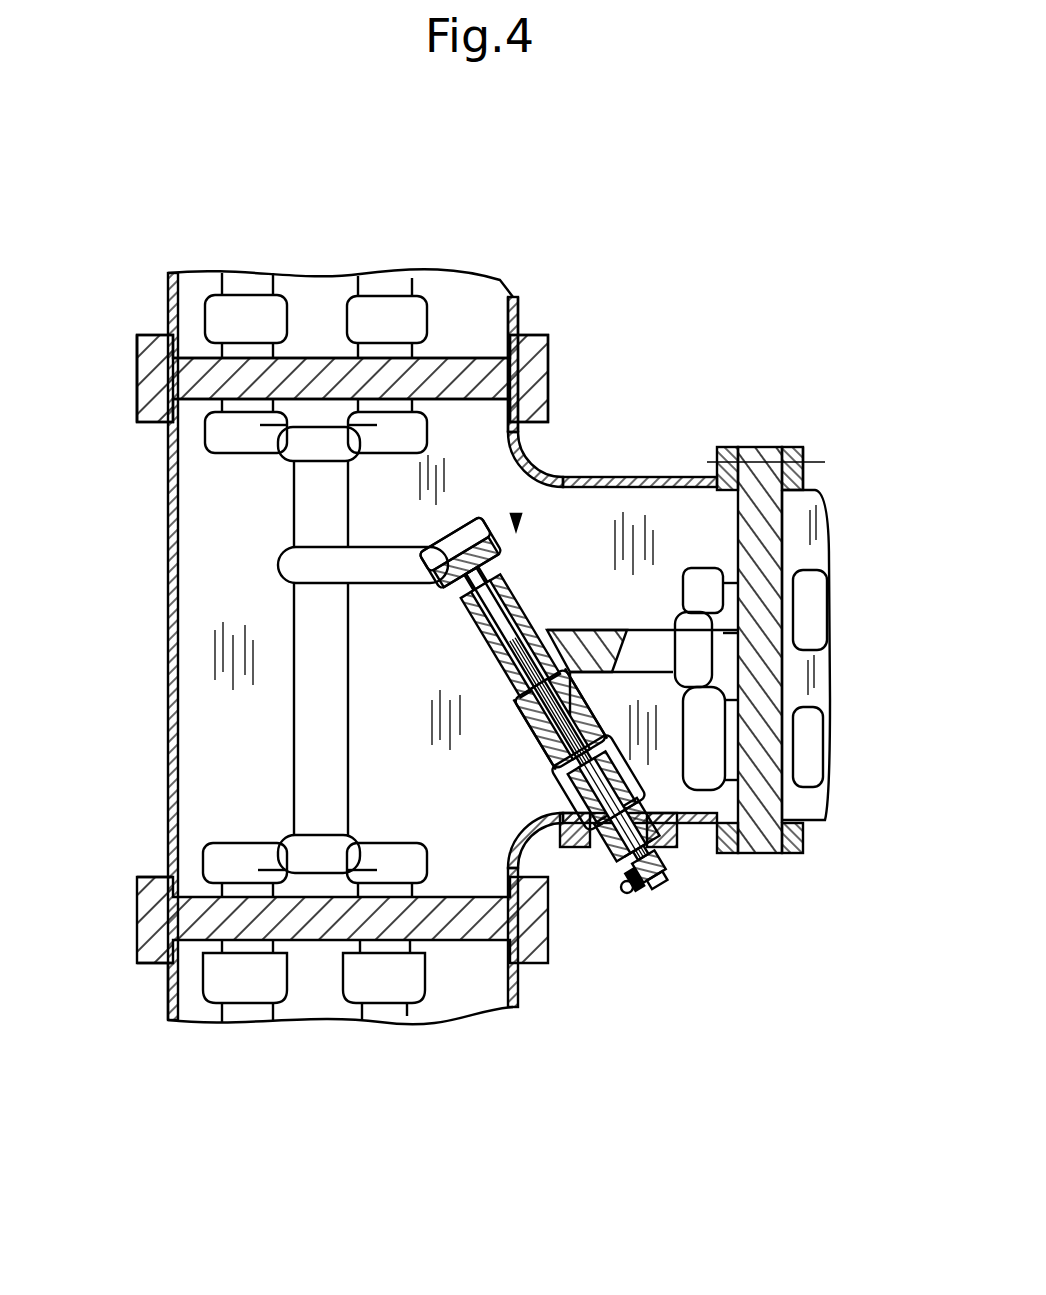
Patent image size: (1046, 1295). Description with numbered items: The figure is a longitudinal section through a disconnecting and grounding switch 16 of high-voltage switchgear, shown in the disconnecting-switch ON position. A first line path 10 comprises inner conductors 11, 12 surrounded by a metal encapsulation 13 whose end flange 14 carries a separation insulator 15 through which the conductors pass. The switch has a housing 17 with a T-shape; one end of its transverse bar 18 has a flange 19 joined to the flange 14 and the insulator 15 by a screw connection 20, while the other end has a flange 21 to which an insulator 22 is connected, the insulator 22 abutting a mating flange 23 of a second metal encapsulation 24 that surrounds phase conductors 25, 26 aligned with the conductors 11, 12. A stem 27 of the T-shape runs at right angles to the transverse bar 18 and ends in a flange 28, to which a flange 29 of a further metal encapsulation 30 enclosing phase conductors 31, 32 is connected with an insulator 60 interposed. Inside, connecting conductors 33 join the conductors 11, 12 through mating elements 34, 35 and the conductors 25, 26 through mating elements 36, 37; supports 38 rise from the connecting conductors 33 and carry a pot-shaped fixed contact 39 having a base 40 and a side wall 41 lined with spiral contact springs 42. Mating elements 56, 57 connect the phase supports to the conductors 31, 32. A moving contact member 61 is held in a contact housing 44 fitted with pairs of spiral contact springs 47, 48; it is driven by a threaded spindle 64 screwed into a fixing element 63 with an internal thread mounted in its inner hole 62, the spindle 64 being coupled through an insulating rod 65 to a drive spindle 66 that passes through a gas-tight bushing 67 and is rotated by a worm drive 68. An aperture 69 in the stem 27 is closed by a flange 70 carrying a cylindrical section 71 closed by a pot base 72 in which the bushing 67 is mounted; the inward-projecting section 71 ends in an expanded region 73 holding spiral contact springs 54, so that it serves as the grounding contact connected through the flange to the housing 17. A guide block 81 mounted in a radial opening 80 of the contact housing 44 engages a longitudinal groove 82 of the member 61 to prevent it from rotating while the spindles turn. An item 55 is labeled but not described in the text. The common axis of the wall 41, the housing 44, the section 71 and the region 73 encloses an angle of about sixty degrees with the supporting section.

The first line path 10 is at (360, 316).
The inner conductor 11 is at (213, 325).
The inner conductor 12 is at (366, 420).
The metal encapsulation 13 is at (152, 330).
The end flange 14 is at (145, 375).
The separation insulator 15 is at (152, 433).
The disconnecting and grounding switch 16 is at (527, 395).
The housing 17 is at (556, 480).
The transverse bar 18 is at (466, 450).
The flange 19 is at (140, 411).
The screw connection 20 is at (140, 333).
The flange 21 is at (148, 878).
The insulator 22 is at (142, 915).
The mating flange 23 is at (150, 950).
The metal encapsulation 24 is at (170, 1030).
The phase conductor 25 is at (215, 980).
The phase conductor 26 is at (370, 980).
The stem 27 is at (673, 517).
The flange 28 is at (723, 452).
The flange 29 is at (793, 462).
The metal encapsulation 30 is at (818, 480).
The phase conductor 31 is at (810, 585).
The phase conductor 32 is at (812, 735).
The connecting conductor 33 is at (307, 488).
The mating element 34 is at (258, 418).
The mating element 35 is at (356, 408).
The mating element 36 is at (245, 870).
The mating element 37 is at (405, 870).
The support 38 is at (285, 568).
The fixed contact 39 is at (460, 552).
The base 40 is at (460, 543).
The side wall 41 is at (447, 530).
The spiral contact spring 42 is at (452, 576).
The contact housing 44 is at (520, 645).
The spiral contact spring 47 is at (558, 628).
The spiral contact spring 48 is at (530, 728).
The spiral contact spring 54 is at (575, 786).
The washer 55 is at (408, 493).
The mating element 56 is at (742, 460).
The mating element 57 is at (708, 768).
The insulator 60 is at (758, 462).
The moving contact member 61 is at (516, 522).
The inner hole 62 is at (460, 532).
The fixing element 63 is at (476, 445).
The threaded spindle 64 is at (556, 655).
The insulating rod 65 is at (650, 857).
The drive spindle 66 is at (655, 868).
The gas-tight bushing 67 is at (660, 876).
The worm drive 68 is at (645, 882).
The aperture 69 is at (612, 862).
The flange 70 is at (576, 838).
The cylindrical section 71 is at (792, 854).
The pot base 72 is at (665, 866).
The expanded region 73 is at (578, 790).
The radial opening 80 is at (520, 684).
The guide block 81 is at (520, 684).
The longitudinal groove 82 is at (547, 600).